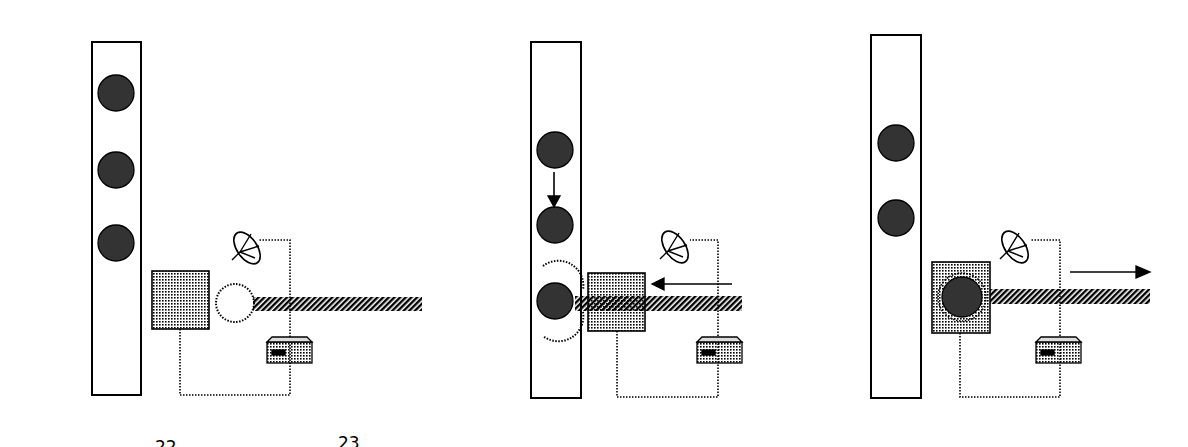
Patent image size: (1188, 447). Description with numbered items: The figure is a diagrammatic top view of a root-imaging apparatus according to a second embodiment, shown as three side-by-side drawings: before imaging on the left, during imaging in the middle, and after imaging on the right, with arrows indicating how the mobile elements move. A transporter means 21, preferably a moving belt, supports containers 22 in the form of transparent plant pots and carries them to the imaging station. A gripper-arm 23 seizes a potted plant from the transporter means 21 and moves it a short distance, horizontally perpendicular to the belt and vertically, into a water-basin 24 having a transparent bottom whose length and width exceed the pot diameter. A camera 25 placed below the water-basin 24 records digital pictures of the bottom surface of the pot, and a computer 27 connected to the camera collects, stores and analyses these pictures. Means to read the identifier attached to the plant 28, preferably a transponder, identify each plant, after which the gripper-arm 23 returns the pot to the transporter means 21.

The transporter means 21 is at (141, 55).
The containers 22 is at (136, 92).
The gripper-arm 23 is at (317, 295).
The water-basin 24 is at (180, 268).
The camera 25 is at (195, 330).
The computer 27 is at (313, 348).
The means to read the identifier attached to the plant 28 is at (253, 236).